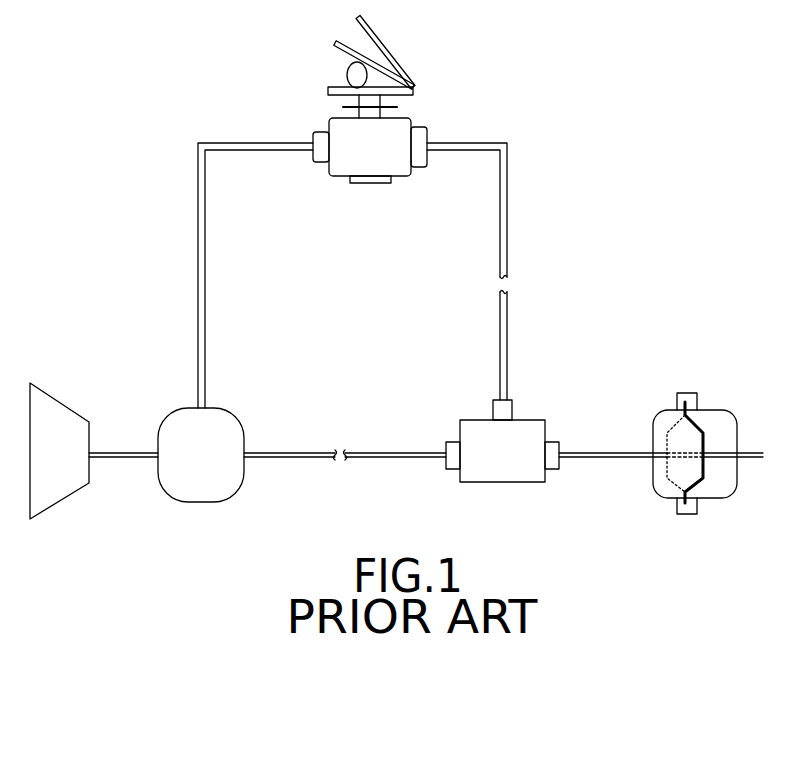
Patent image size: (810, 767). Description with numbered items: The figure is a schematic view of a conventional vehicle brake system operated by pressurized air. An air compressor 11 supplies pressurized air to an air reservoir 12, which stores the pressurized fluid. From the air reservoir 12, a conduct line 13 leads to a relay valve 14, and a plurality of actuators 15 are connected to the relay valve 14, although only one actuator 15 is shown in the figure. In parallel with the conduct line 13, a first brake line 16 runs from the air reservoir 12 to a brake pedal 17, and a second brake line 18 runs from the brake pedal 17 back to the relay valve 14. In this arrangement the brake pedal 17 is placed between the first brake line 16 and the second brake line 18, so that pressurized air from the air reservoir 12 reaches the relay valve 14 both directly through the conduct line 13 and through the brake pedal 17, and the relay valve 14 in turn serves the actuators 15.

The air compressor 11 is at (58, 402).
The air reservoir 12 is at (167, 419).
The conduct line 13 is at (290, 453).
The relay valve 14 is at (472, 420).
The actuator 15 is at (657, 412).
The first brake line 16 is at (257, 143).
The brake pedal 17 is at (393, 47).
The second brake line 18 is at (468, 143).